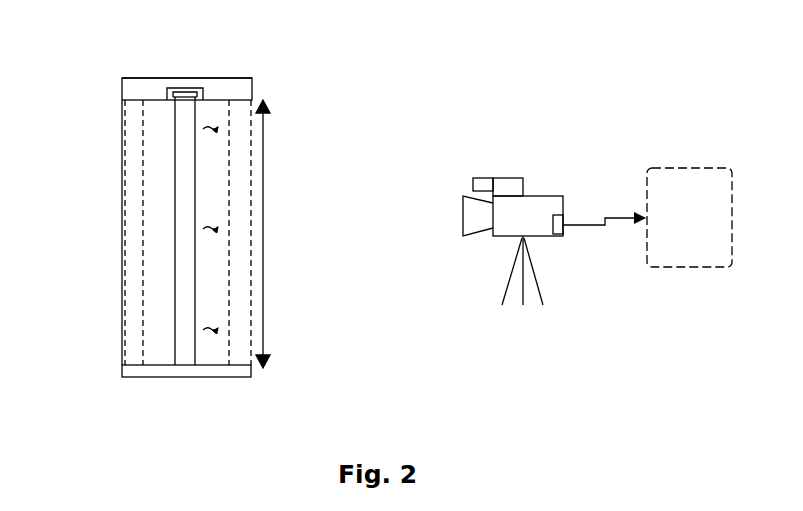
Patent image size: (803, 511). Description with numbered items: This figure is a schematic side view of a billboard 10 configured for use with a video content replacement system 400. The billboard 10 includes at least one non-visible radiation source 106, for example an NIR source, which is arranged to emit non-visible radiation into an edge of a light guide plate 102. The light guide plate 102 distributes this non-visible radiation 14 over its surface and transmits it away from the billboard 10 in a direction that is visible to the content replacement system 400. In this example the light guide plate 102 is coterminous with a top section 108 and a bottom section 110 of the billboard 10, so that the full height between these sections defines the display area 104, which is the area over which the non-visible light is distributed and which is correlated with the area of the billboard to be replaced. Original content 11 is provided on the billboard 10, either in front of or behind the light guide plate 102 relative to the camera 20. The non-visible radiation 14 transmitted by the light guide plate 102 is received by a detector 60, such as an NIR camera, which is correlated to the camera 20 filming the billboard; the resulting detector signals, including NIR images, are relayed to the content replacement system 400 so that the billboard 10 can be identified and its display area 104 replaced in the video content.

The billboard 10 is at (232, 78).
The original content 11 is at (137, 158).
The non-visible radiation 14 is at (212, 333).
The camera 20 is at (538, 237).
The detector 60 is at (504, 178).
The light guide plate 102 is at (187, 353).
The display area 104 is at (263, 220).
The non-visible radiation source 106 is at (185, 88).
The top section 108 is at (138, 90).
The bottom section 110 is at (138, 373).
The content replacement system 400 is at (689, 217).